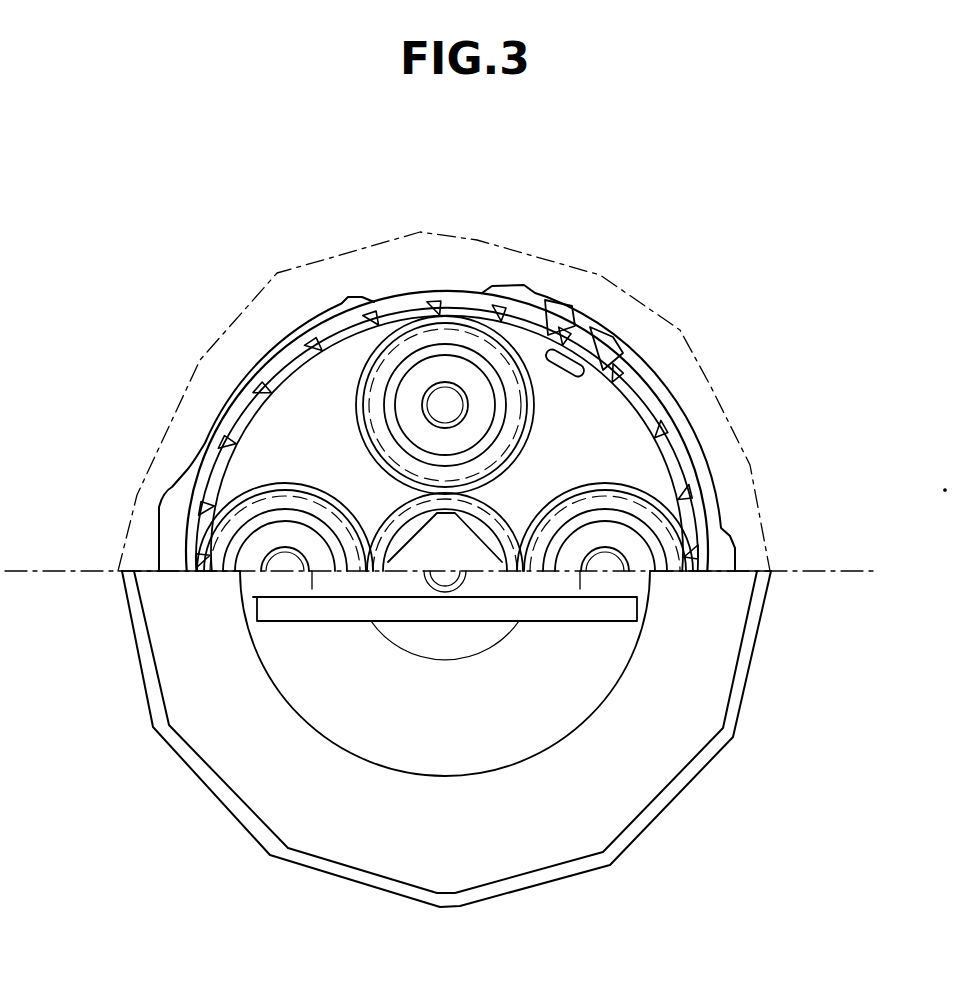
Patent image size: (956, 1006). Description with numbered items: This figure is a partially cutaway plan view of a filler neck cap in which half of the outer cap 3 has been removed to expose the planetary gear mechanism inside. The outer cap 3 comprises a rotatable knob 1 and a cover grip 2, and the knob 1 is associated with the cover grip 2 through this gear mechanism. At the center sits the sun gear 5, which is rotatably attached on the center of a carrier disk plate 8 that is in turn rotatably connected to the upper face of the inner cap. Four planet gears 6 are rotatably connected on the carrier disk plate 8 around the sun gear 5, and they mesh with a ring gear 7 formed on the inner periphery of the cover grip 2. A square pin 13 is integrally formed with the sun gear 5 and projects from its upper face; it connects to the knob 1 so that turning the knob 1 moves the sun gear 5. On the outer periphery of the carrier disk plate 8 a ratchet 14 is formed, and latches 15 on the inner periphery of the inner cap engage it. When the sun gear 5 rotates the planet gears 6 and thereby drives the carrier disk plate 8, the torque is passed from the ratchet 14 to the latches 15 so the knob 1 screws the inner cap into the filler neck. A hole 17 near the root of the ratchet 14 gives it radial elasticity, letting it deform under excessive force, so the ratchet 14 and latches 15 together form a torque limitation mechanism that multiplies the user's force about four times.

The rotatable knob 1 is at (552, 612).
The cover grip 2 is at (753, 667).
The outer cap 3 is at (188, 785).
The sun gear 5 is at (505, 527).
The planet gears 6 is at (418, 336).
The ring gear 7 is at (196, 460).
The carrier disk plate 8 is at (580, 422).
The square pin 13 is at (442, 555).
The ratchet 14 is at (580, 338).
The latches 15 is at (263, 390).
The hole 17 is at (547, 350).